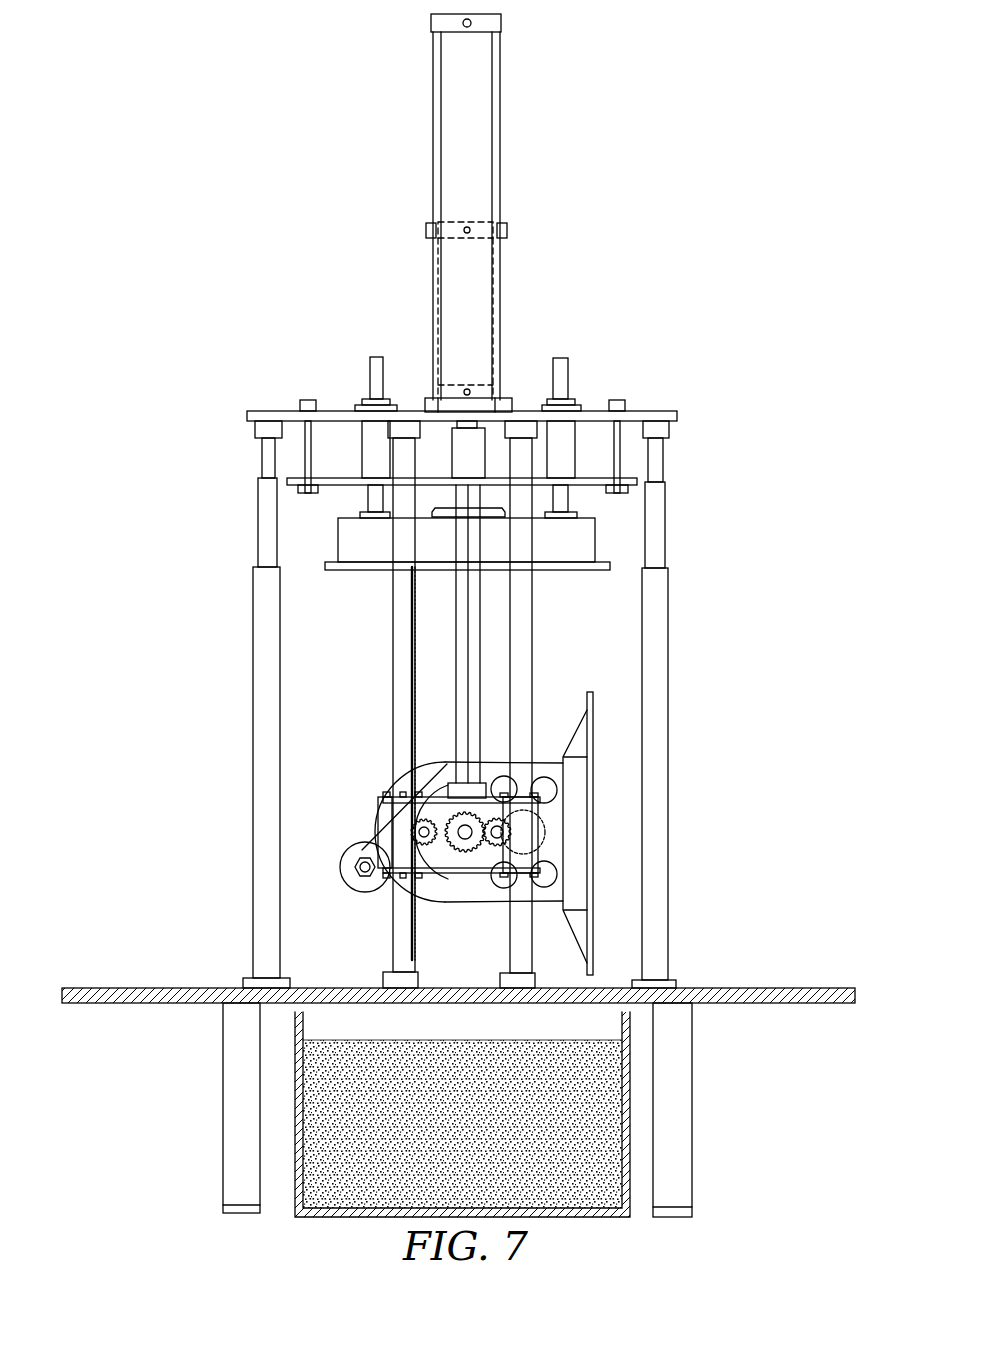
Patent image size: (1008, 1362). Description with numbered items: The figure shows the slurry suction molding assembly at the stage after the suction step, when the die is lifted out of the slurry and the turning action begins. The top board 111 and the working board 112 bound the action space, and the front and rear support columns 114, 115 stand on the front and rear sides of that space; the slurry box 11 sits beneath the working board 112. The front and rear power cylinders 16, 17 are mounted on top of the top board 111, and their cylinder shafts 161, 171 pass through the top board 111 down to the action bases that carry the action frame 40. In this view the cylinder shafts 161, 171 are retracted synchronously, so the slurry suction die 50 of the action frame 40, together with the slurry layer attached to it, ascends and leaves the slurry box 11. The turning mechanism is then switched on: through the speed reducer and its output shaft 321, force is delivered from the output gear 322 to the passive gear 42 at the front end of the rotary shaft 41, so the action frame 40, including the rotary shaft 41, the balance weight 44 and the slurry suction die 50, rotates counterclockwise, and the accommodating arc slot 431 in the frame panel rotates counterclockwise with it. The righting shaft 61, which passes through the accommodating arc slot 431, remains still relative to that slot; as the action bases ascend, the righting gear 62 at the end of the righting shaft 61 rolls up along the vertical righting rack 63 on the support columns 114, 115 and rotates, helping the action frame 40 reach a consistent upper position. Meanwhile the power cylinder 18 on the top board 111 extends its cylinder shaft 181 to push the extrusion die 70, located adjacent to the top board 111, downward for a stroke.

The front power cylinder 16 is at (506, 213).
The rear power cylinder 17 is at (470, 117).
The power cylinder 18 is at (470, 292).
The top board 111 is at (644, 414).
The cylinder shaft 181 is at (478, 497).
The extrusion die 70 is at (607, 567).
The cylinder shaft 161 is at (601, 641).
The cylinder shaft 171 is at (468, 597).
The front support column 114 is at (469, 704).
The rear support column 115 is at (268, 730).
The righting rack 63 is at (408, 652).
The action frame 40 is at (440, 769).
The accommodating arc slot 431 is at (415, 793).
The righting shaft 61 is at (418, 832).
The righting gear 62 is at (387, 848).
The balance weight 44 is at (355, 880).
The passive gear 42 is at (505, 796).
The output shaft 321 is at (510, 828).
The rotary shaft 41 is at (470, 834).
The output gear 322 is at (510, 843).
The slurry suction die 50 is at (595, 905).
The working board 112 is at (760, 988).
The slurry box 11 is at (593, 1112).